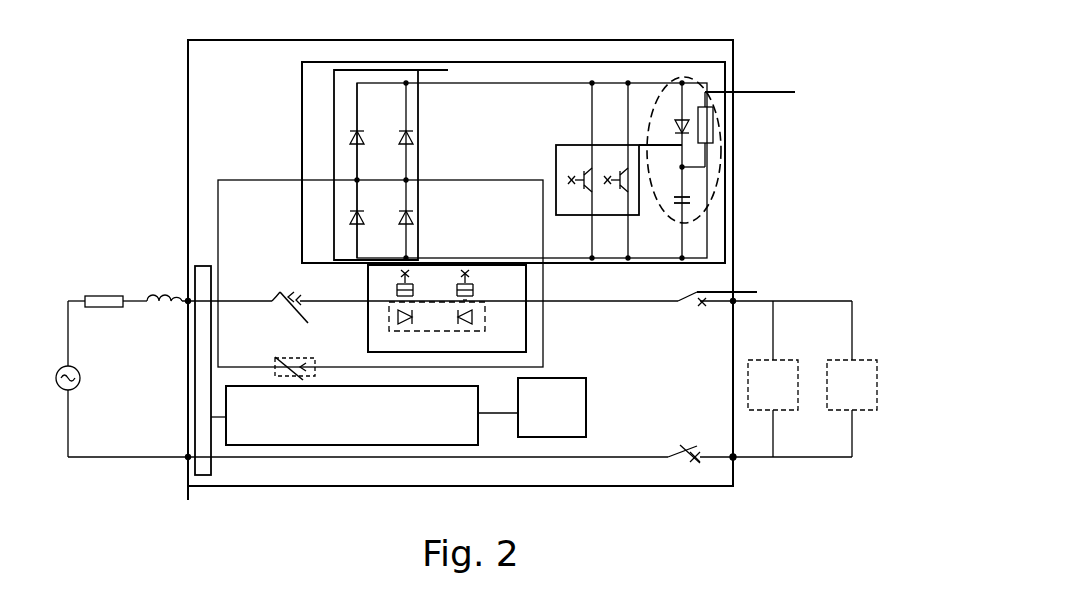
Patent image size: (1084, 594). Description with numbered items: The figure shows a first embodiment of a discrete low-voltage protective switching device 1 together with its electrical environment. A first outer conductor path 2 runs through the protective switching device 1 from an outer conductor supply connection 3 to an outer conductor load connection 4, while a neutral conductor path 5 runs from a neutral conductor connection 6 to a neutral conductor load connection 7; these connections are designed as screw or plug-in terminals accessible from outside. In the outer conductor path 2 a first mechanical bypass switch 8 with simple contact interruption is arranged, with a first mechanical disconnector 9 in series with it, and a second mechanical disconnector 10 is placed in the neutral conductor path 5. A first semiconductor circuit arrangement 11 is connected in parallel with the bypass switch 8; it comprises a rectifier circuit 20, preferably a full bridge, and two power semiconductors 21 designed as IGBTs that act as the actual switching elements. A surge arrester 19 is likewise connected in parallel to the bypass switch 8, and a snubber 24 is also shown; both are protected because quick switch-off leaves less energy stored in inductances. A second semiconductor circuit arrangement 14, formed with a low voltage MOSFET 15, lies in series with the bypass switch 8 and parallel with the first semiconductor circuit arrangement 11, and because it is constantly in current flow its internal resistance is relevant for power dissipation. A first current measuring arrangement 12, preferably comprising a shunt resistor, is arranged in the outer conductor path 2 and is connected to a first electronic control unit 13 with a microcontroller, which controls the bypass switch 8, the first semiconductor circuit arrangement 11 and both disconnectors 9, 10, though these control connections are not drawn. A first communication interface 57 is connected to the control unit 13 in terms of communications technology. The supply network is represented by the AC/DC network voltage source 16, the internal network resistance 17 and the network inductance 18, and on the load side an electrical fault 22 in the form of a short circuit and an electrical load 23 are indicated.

The low-voltage protective switching device 1 is at (222, 77).
The first outer conductor path 2 is at (615, 303).
The outer conductor supply connection 3 is at (147, 263).
The outer conductor load connection 4 is at (748, 288).
The neutral conductor path 5 is at (227, 458).
The neutral conductor connection 6 is at (460, 481).
The neutral conductor load connection 7 is at (735, 459).
The first mechanical bypass switch 8 is at (300, 313).
The first mechanical disconnector 9 is at (710, 171).
The second mechanical disconnector 10 is at (682, 455).
The first semiconductor circuit arrangement 11 is at (503, 157).
The first current measuring arrangement 12 is at (336, 273).
The first electronic control unit 13 is at (346, 415).
The second semiconductor circuit arrangement 14 is at (522, 293).
The low voltage MOSFET 15 is at (475, 293).
The AC/DC network voltage source 16 is at (72, 384).
The internal network resistance 17 is at (43, 361).
The network inductance 18 is at (94, 271).
The surge arrester 19 is at (314, 355).
The rectifier circuit 20 is at (513, 132).
The power semiconductors 21 is at (638, 113).
The electrical fault 22 is at (786, 386).
The electrical load 23 is at (865, 386).
The snubber 24 is at (769, 57).
The first communication interface 57 is at (568, 417).